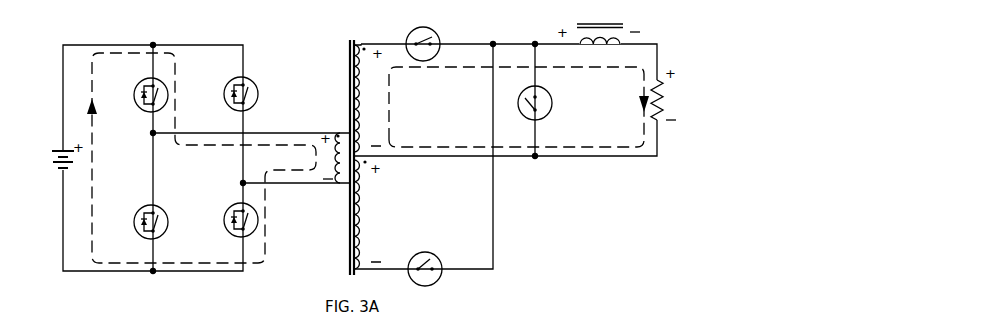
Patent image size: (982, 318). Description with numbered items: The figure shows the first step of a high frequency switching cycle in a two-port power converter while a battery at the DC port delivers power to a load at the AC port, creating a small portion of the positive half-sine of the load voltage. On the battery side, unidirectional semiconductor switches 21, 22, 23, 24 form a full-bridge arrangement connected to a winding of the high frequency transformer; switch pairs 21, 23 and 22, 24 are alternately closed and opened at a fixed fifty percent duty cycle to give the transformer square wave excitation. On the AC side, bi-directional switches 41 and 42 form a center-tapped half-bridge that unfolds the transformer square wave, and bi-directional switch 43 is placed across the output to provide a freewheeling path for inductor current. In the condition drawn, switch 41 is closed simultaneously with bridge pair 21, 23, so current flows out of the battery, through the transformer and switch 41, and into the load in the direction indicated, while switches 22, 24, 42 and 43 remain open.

The unidirectional semiconductor switch 21 is at (139, 90).
The unidirectional semiconductor switch 22 is at (230, 89).
The unidirectional semiconductor switch 23 is at (231, 213).
The unidirectional semiconductor switch 24 is at (142, 215).
The bi-directional semiconductor switch 41 is at (423, 36).
The bi-directional semiconductor switch 42 is at (425, 261).
The bi-directional semiconductor switch 43 is at (527, 98).